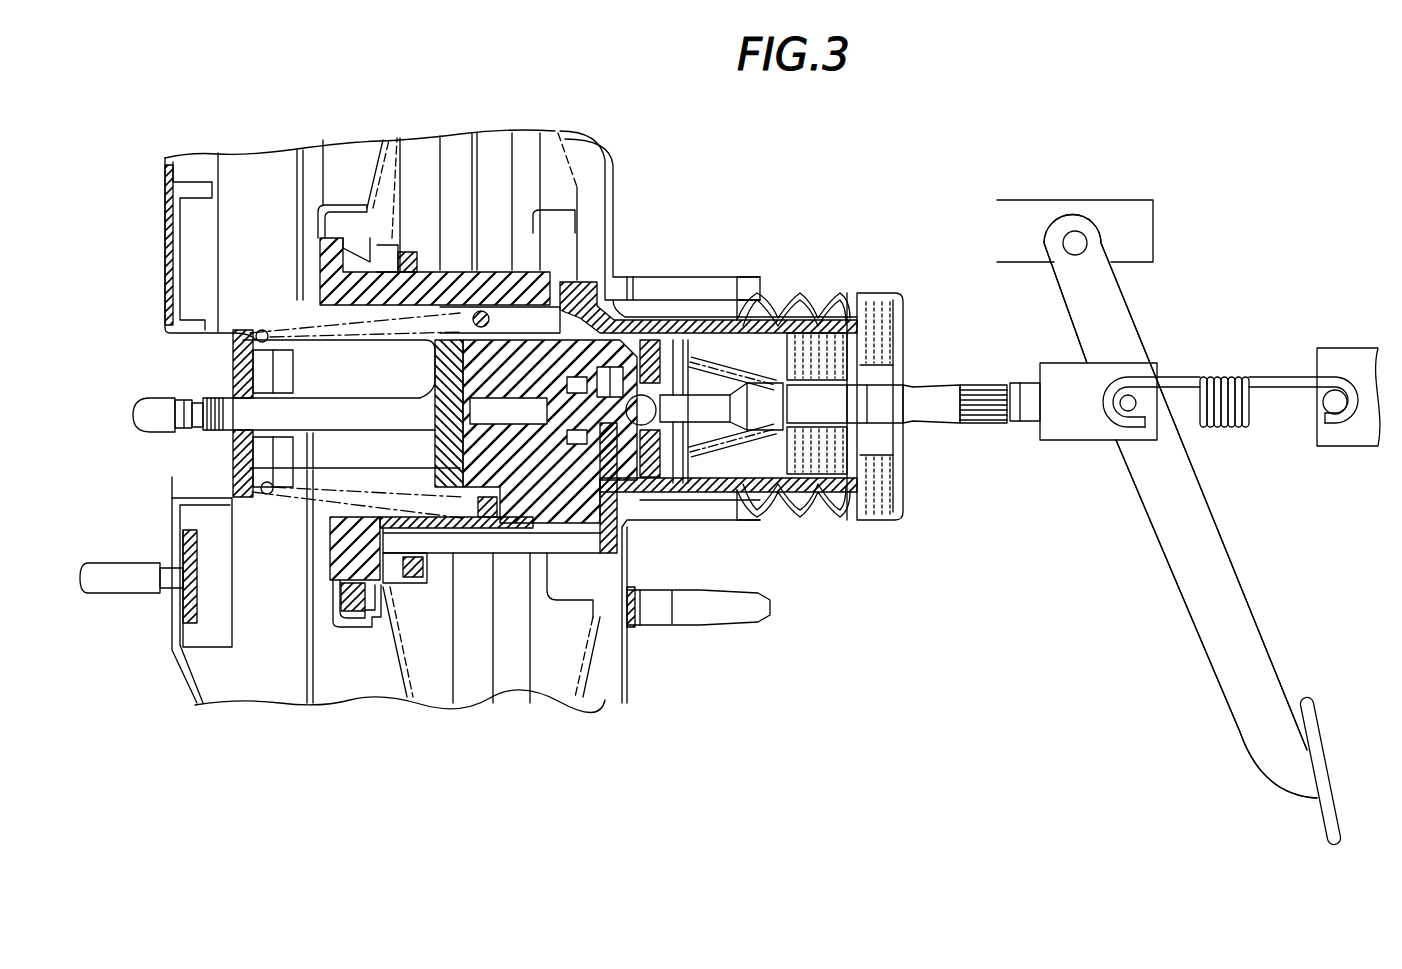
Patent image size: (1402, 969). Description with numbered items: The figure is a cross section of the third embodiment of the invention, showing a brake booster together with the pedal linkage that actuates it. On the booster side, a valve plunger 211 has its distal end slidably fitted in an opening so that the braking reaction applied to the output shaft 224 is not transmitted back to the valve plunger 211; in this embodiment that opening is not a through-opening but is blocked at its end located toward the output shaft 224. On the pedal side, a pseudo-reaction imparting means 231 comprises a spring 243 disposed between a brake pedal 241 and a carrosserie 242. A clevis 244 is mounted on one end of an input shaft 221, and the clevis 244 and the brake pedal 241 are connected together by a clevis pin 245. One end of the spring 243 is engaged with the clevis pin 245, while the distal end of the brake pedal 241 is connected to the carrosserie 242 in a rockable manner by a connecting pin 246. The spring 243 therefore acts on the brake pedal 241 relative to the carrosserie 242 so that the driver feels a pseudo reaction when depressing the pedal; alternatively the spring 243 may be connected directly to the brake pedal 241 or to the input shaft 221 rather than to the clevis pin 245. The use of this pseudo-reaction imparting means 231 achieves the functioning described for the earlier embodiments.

The valve plunger 211 is at (437, 445).
The input shaft 221 is at (933, 392).
The output shaft 224 is at (233, 410).
The pseudo-reaction imparting means 231 is at (1156, 341).
The brake pedal 241 is at (1220, 624).
The carrosserie 242 is at (1118, 212).
The spring 243 is at (1233, 430).
The clevis 244 is at (1047, 441).
The clevis pin 245 is at (1127, 412).
The connecting pin 246 is at (1070, 233).